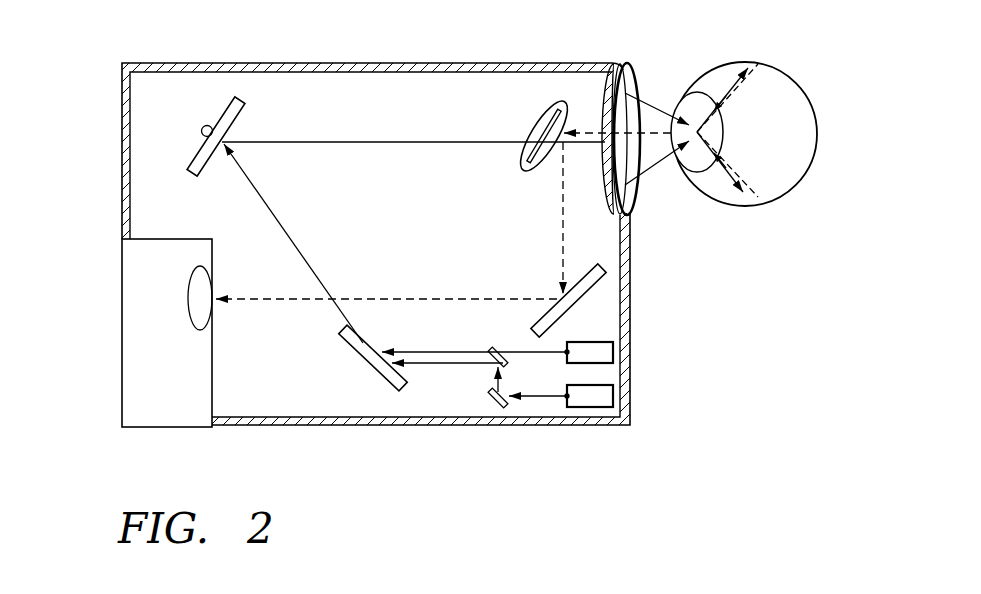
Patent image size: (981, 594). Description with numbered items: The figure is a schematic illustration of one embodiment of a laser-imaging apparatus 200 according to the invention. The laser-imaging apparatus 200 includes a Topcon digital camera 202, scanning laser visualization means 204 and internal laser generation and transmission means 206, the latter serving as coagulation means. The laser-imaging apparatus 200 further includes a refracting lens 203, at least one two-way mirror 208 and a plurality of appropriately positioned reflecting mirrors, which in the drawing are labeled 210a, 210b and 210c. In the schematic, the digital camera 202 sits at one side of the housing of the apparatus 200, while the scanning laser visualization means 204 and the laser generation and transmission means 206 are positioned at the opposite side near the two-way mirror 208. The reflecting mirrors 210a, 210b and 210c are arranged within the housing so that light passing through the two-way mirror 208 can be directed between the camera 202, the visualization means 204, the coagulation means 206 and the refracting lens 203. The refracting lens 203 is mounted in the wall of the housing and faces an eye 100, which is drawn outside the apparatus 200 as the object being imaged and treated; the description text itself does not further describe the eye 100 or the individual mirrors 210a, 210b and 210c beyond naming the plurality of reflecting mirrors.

The eye 100 is at (788, 188).
The laser-imaging apparatus 200 is at (100, 228).
The Topcon digital camera 202 is at (122, 381).
The refracting lens 203 is at (638, 203).
The scanning laser visualization means 204 is at (592, 408).
The internal laser generation and transmission means 206 is at (607, 363).
The two-way mirror 208 is at (494, 348).
The mirror 210a is at (363, 355).
The mirror 210b is at (590, 288).
The mirror 210c is at (222, 112).